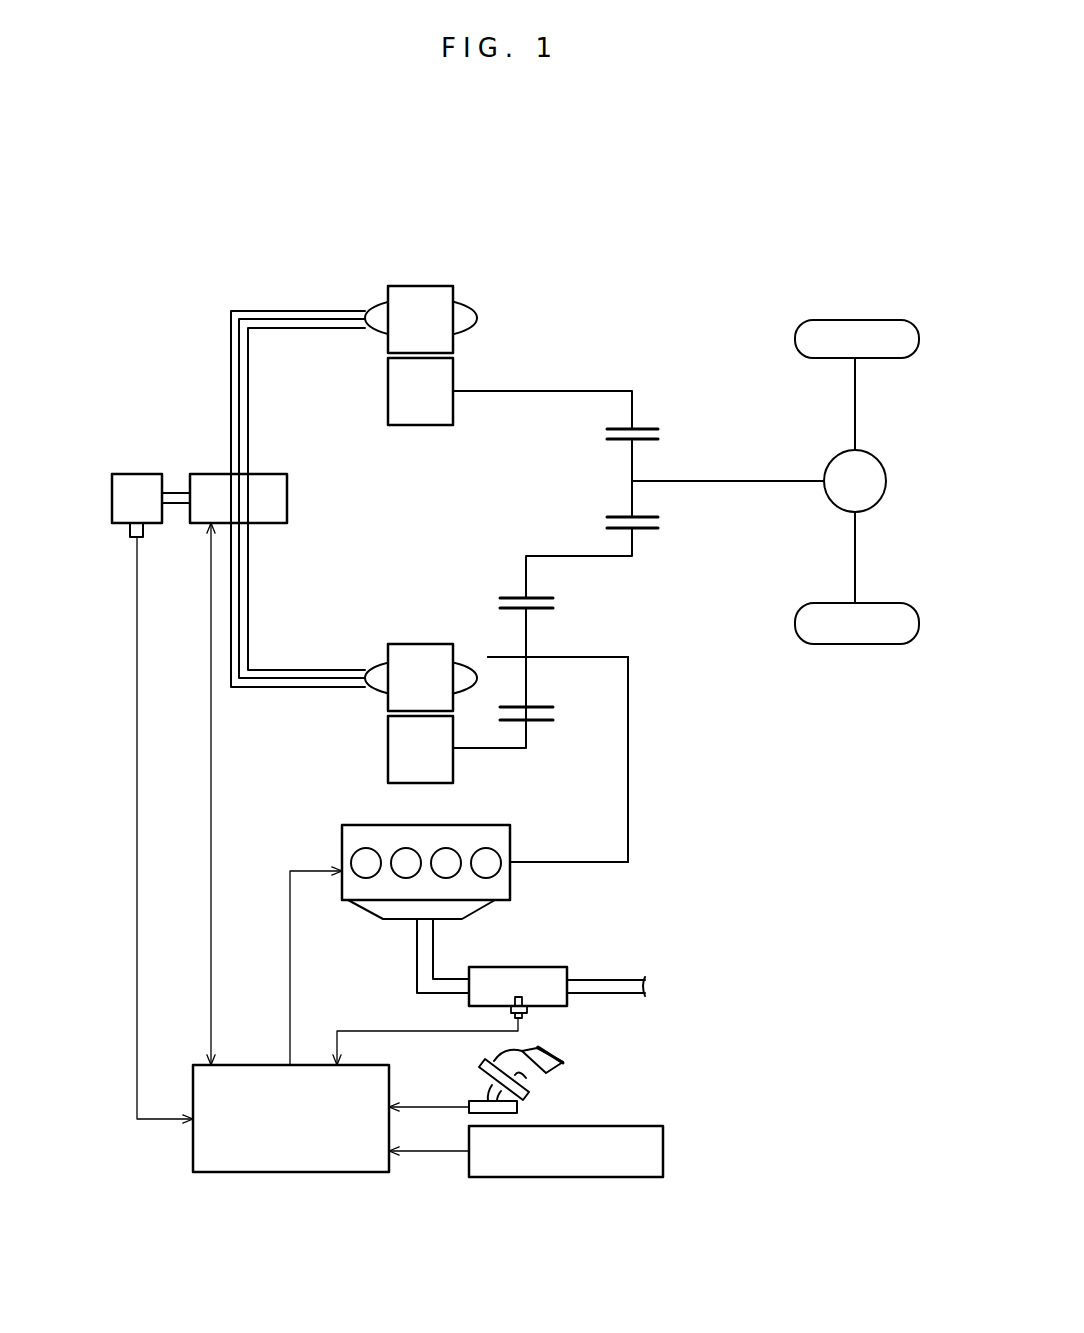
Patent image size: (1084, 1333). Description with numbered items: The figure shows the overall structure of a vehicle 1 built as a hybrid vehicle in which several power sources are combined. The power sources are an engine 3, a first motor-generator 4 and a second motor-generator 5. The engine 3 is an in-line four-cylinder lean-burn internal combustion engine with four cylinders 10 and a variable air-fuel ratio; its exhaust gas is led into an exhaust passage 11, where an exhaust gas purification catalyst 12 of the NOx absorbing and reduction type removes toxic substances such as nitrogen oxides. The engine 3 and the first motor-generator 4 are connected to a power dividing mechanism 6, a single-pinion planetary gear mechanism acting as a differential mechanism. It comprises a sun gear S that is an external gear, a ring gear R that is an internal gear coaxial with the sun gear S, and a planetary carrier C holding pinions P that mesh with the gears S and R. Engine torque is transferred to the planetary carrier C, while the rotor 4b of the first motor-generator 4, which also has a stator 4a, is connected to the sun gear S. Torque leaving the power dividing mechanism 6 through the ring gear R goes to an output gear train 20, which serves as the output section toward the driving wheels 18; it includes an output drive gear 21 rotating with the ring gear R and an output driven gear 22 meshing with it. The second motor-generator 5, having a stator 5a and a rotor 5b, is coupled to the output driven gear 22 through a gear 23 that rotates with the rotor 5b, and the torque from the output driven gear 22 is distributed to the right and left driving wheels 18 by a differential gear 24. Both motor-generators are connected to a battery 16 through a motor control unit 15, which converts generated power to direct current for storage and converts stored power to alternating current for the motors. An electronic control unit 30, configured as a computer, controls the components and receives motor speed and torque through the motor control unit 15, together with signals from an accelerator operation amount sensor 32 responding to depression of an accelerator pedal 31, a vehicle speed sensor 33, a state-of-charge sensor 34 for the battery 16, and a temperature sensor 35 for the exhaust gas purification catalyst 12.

The vehicle 1 is at (559, 151).
The engine 3 is at (348, 822).
The first motor-generator 4 is at (385, 643).
The stator 4a is at (437, 652).
The rotor 4b is at (445, 773).
The second motor-generator 5 is at (385, 274).
The stator 5a is at (437, 291).
The rotor 5b is at (395, 397).
The power dividing mechanism 6 is at (470, 578).
The cylinders 10 is at (404, 848).
The exhaust passage 11 is at (434, 940).
The exhaust gas purification catalyst 12 is at (532, 967).
The motor control unit 15 is at (207, 478).
The battery 16 is at (137, 478).
The driving wheels 18 is at (838, 320).
The output gear train 20 is at (541, 477).
The output drive gear 21 is at (616, 530).
The output driven gear 22 is at (614, 513).
The gear 23 is at (652, 425).
The differential gear 24 is at (832, 458).
The electronic control unit (ECU) 30 is at (258, 1065).
The accelerator pedal 31 is at (480, 1062).
The accelerator operation amount sensor 32 is at (520, 1111).
The vehicle speed sensor 33 is at (663, 1150).
The state-of-charge (SOC) sensor 34 is at (131, 538).
The temperature sensor 35 is at (528, 1012).
The ring gear R is at (553, 592).
The pinions P is at (527, 635).
The sun gear S is at (553, 720).
The planetary carrier C is at (628, 693).